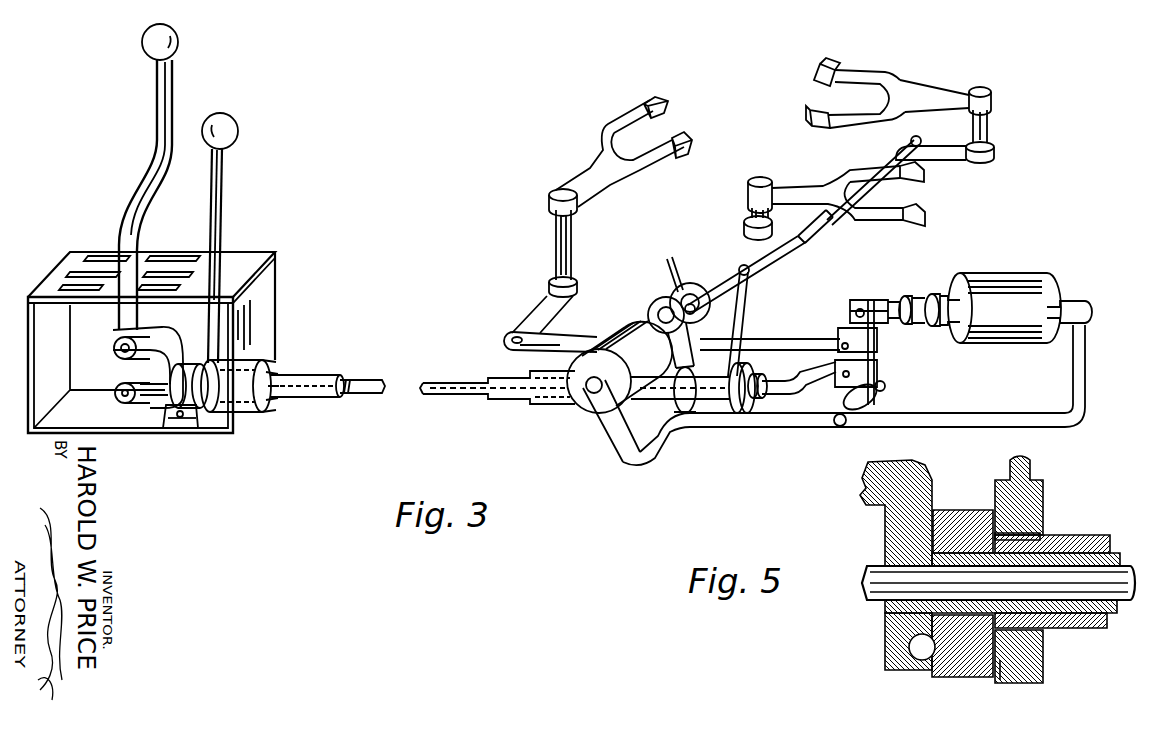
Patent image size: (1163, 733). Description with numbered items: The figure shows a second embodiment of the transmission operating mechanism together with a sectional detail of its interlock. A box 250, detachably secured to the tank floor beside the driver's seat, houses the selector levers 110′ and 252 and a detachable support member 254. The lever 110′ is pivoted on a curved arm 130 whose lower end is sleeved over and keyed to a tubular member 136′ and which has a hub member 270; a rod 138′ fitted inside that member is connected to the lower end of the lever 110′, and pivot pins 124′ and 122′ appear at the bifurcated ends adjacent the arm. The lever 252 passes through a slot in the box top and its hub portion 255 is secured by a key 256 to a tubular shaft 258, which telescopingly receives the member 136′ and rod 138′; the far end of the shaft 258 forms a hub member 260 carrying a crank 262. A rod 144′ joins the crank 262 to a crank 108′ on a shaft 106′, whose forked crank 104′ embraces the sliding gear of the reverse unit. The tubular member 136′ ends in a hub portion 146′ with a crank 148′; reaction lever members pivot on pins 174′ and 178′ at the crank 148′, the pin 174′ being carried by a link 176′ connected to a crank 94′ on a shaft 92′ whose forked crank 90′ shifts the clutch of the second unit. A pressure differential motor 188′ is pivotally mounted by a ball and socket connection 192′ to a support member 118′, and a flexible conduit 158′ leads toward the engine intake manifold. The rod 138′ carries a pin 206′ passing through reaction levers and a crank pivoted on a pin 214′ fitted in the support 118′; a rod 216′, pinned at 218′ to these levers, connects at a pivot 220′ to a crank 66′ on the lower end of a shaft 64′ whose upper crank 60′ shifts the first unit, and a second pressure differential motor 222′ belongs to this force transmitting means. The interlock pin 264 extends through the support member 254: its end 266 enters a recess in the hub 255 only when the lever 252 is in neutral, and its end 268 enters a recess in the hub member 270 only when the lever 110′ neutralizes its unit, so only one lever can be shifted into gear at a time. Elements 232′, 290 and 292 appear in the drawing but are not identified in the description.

In FIG. 3, the selector lever 110′ is at (172, 113).
In FIG. 3, the selector lever 252 is at (222, 198).
In FIG. 5, the selector lever 252 is at (1028, 463).
In FIG. 3, the box 250 is at (265, 300).
In FIG. 3, the curved arm 130 is at (165, 336).
In FIG. 5, the curved arm 130 is at (875, 502).
In FIG. 3, the pin 124′ is at (121, 346).
In FIG. 3, the pin 122′ is at (121, 396).
In FIG. 3, the hub portion 255 is at (230, 363).
In FIG. 5, the hub portion 255 is at (1040, 665).
In FIG. 3, the tubular shaft 258 is at (265, 370).
In FIG. 5, the tubular shaft 258 is at (1047, 537).
In FIG. 3, the tubular member 136′ is at (318, 398).
In FIG. 5, the tubular member 136′ is at (1093, 552).
In FIG. 3, the rod 138′ is at (358, 395).
In FIG. 3, the support member 254 is at (178, 428).
In FIG. 5, the support member 254 is at (935, 510).
In FIG. 3, the pressure differential operated motor 188′ is at (612, 330).
In FIG. 3, the hub member 260 is at (680, 400).
In FIG. 3, the support member 118′ is at (790, 420).
In FIG. 3, the ball and socket connection 192′ is at (1073, 320).
In FIG. 3, the pressure differential operated motor 222′ is at (1010, 283).
In FIG. 3, the bellows 232′ is at (925, 285).
In FIG. 3, the coupling 290 is at (877, 287).
In FIG. 3, the coupling tube 292 is at (893, 302).
In FIG. 3, the pin 218′ is at (878, 350).
In FIG. 3, the rod 216′ is at (792, 340).
In FIG. 3, the hub portion 146′ is at (763, 373).
In FIG. 3, the crank 148′ is at (755, 364).
In FIG. 3, the crank 262 is at (705, 356).
In FIG. 3, the flexible conduit 158′ is at (670, 266).
In FIG. 3, the pin 206′ is at (845, 395).
In FIG. 3, the pin 214′ is at (880, 388).
In FIG. 3, the rod 144′ is at (890, 170).
In FIG. 3, the link 176′ is at (805, 262).
In FIG. 3, the pin 174′ is at (775, 290).
In FIG. 3, the pin 178′ is at (745, 318).
In FIG. 3, the crank 60′ is at (577, 183).
In FIG. 3, the shaft 64′ is at (571, 233).
In FIG. 3, the crank 66′ is at (547, 300).
In FIG. 3, the pivotal connection 220′ is at (505, 343).
In FIG. 3, the crank 90′ is at (790, 188).
In FIG. 3, the shaft 92′ is at (753, 202).
In FIG. 3, the crank 94′ is at (748, 240).
In FIG. 3, the crank 104′ is at (928, 92).
In FIG. 3, the shaft 106′ is at (987, 127).
In FIG. 3, the crank 108′ is at (935, 162).
In FIG. 5, the key 256 is at (1000, 532).
In FIG. 5, the hub member 270 is at (890, 627).
In FIG. 5, the pin 264 is at (960, 653).
In FIG. 5, the end 268 is at (920, 658).
In FIG. 5, the end 266 is at (997, 680).